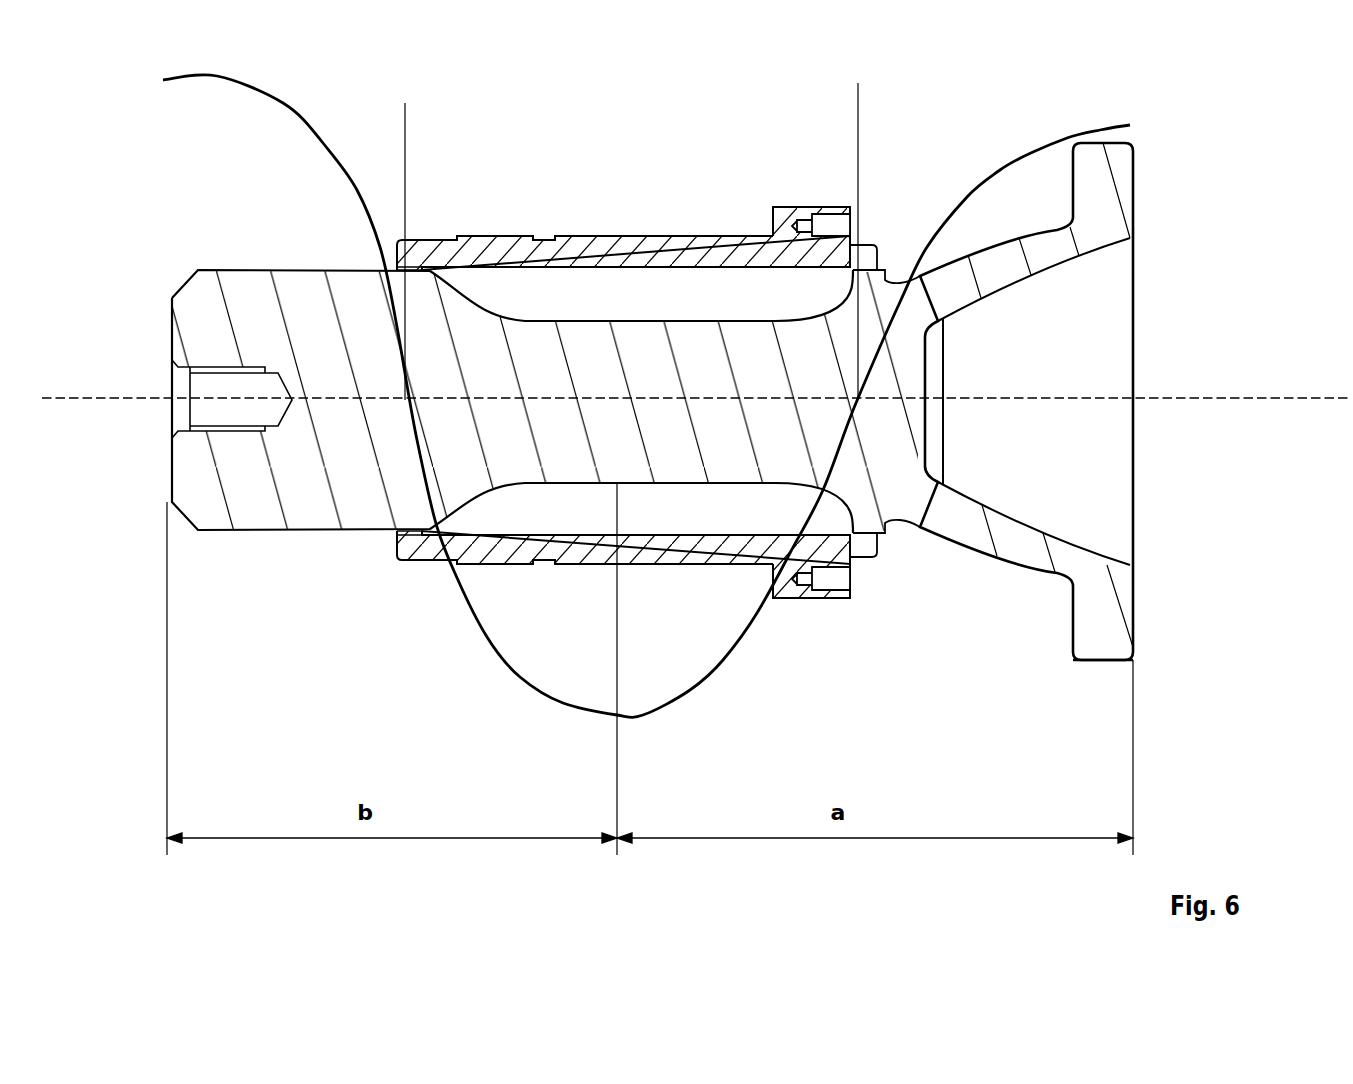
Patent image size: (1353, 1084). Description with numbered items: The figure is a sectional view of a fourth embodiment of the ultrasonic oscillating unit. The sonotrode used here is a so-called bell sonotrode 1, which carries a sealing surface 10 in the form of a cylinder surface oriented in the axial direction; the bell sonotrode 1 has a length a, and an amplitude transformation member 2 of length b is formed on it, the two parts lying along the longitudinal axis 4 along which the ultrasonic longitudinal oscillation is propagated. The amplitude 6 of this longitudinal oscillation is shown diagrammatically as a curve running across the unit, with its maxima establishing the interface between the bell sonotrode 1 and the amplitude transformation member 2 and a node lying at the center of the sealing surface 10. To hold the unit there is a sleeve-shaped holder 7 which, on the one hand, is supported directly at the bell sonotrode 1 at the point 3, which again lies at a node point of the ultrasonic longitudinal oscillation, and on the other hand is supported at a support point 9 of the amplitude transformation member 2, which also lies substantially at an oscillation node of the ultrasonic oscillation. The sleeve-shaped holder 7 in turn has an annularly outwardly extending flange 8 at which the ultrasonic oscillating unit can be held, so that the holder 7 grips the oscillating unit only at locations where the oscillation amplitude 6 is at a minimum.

The bell sonotrode 1 is at (958, 520).
The amplitude transformation member 2 is at (313, 288).
The projection 3 is at (878, 268).
The longitudinal axis 4 is at (115, 404).
The amplitude 6 is at (537, 690).
The sleeve-shaped holder 7 is at (663, 566).
The flange 8 is at (833, 593).
The support point 9 is at (395, 533).
The sealing surface 10 is at (1097, 667).